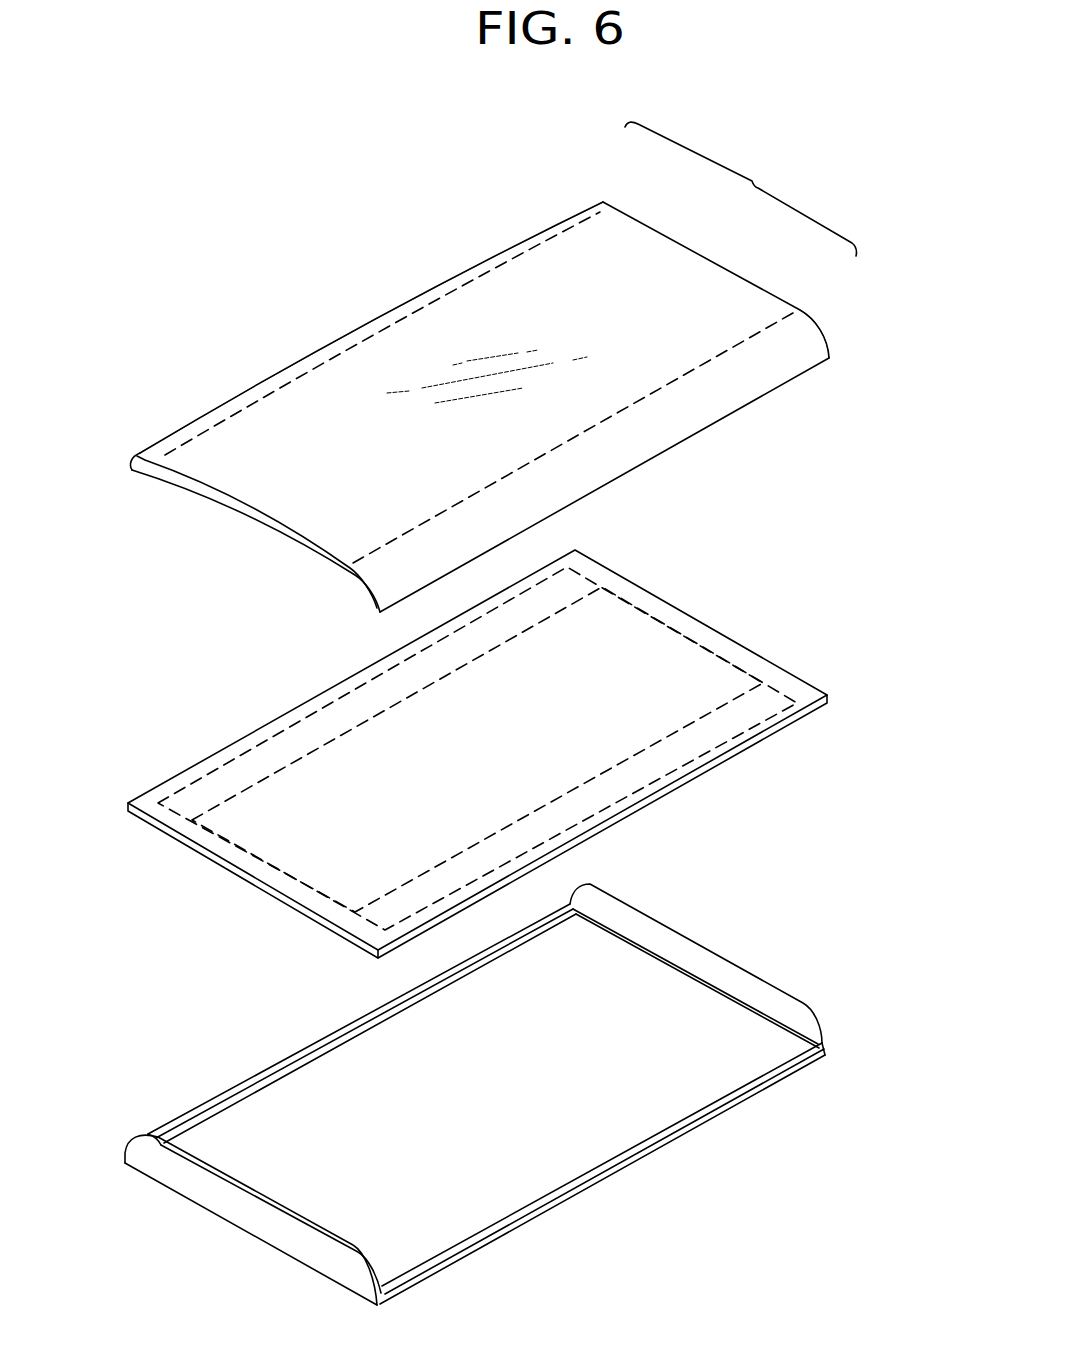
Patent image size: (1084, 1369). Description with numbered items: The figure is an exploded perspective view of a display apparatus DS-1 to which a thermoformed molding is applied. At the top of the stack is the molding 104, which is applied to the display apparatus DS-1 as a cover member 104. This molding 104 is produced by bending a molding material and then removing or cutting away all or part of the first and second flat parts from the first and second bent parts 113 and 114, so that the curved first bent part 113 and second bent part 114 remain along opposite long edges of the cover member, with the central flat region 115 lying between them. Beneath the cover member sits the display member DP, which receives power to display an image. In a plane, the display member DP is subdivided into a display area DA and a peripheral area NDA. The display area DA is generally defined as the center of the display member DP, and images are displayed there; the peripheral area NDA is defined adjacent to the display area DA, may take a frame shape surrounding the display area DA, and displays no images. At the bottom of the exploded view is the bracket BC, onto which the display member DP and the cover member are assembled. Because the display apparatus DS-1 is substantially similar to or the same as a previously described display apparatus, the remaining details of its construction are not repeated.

The display apparatus DS-1 is at (312, 261).
The molding 104 is at (741, 189).
The first bent part 113 is at (800, 327).
The second bent part 114 is at (591, 199).
The flat portion of cover window 115 is at (673, 258).
The display member DP is at (830, 697).
The display area DA is at (285, 782).
The peripheral area NDA is at (168, 785).
The bracket BC is at (828, 1026).